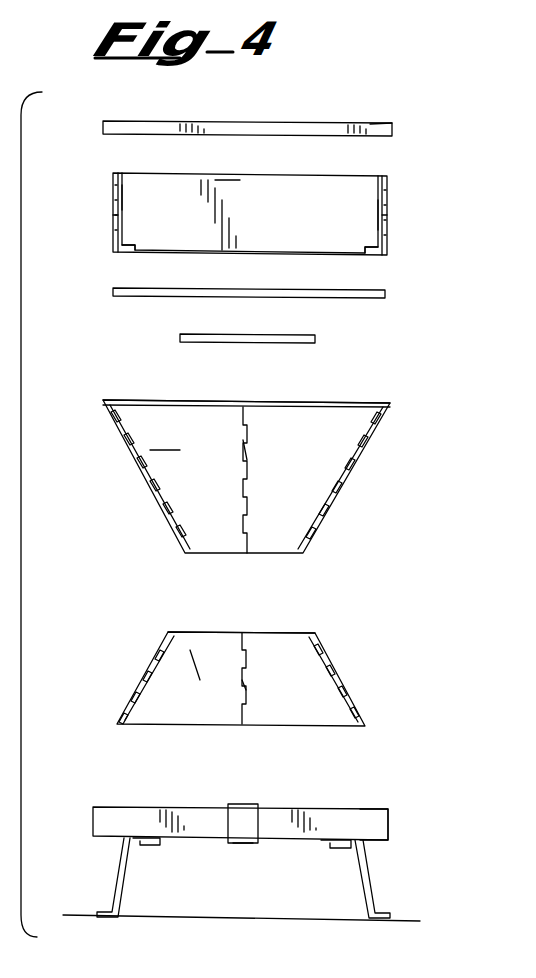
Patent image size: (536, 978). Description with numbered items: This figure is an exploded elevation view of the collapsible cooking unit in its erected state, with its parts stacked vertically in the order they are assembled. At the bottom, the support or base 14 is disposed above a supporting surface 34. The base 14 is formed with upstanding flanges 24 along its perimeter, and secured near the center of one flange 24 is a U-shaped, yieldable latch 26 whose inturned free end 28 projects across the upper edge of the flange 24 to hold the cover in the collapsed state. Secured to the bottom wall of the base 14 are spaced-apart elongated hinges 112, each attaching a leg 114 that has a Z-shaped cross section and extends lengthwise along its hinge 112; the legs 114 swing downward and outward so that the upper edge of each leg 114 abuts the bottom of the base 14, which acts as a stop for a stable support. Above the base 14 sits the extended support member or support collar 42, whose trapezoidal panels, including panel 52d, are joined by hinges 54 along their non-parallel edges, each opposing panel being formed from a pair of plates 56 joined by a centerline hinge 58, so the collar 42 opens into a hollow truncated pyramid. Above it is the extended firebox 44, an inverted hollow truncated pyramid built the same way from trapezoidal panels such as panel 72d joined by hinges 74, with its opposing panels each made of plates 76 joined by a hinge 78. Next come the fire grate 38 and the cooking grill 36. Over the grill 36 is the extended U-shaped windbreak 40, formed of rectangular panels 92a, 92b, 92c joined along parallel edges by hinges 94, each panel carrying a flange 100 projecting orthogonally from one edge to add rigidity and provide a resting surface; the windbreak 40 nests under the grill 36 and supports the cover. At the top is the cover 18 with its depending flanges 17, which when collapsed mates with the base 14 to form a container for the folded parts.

The support or base 14 is at (234, 841).
The depending flanges 17 is at (377, 128).
The cover 18 is at (124, 118).
The upstanding flanges 24 is at (93, 819).
The U-shaped yieldable latch 26 is at (243, 845).
The inturned free end 28 is at (245, 804).
The supporting surface 34 is at (85, 913).
The cooking grill 36 is at (120, 290).
The fire grate 38 is at (182, 337).
The windbreak 40 is at (111, 202).
The support member or support collar 42 is at (140, 665).
The firebox 44 is at (145, 483).
The trapezoidally shaped panel 52d is at (196, 665).
The hinges 54 is at (132, 689).
The plates 56 is at (218, 645).
The hinge 58 is at (250, 691).
The trapezoidally shaped panel 72d is at (178, 455).
The hinges 74 is at (168, 520).
The plates 76 is at (218, 425).
The hinge 78 is at (248, 480).
The rectangularly shaped panel 92a is at (124, 195).
The rectangularly shaped panel 92b is at (238, 190).
The rectangularly shaped panel 92c is at (377, 215).
The hinges 94 is at (114, 233).
The flanges 100 is at (128, 255).
The elongated hinges 112 is at (146, 847).
The leg 114 is at (120, 870).